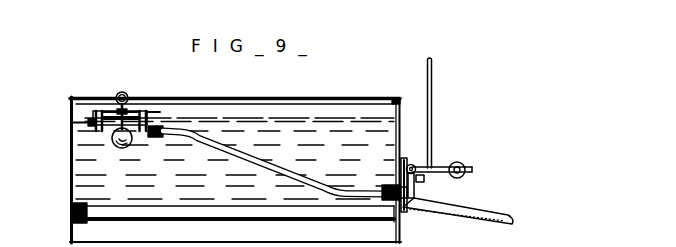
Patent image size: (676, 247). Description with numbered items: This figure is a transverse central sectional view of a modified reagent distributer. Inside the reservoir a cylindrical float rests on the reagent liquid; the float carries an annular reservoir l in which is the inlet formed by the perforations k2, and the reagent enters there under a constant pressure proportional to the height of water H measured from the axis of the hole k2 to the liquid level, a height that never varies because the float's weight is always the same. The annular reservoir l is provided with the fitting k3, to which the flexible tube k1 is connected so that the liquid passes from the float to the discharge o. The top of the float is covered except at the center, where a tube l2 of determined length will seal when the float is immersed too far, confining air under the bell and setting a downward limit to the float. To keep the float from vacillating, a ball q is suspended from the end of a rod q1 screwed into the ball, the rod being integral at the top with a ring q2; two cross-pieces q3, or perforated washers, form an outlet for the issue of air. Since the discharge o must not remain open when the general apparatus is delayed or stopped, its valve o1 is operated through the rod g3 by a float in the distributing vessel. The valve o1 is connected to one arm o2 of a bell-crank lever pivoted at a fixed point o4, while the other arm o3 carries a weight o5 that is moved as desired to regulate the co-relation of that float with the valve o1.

The height of water H is at (235, 170).
The ball q is at (118, 149).
The rod q1 is at (136, 110).
The ring q2 is at (124, 91).
The cross-pieces q3 is at (112, 146).
The annular reservoir l is at (108, 109).
The tube l2 is at (160, 109).
The flexible tube k1 is at (275, 165).
The perforations k2 is at (72, 125).
The fitting k3 is at (153, 139).
The discharge o is at (388, 197).
The valve o1 is at (407, 208).
The arm of bell-crank lever o2 is at (428, 183).
The arm of bell-crank lever o3 is at (476, 171).
The fixed point o4 is at (452, 141).
The weight o5 is at (466, 165).
The rod g3 is at (441, 113).